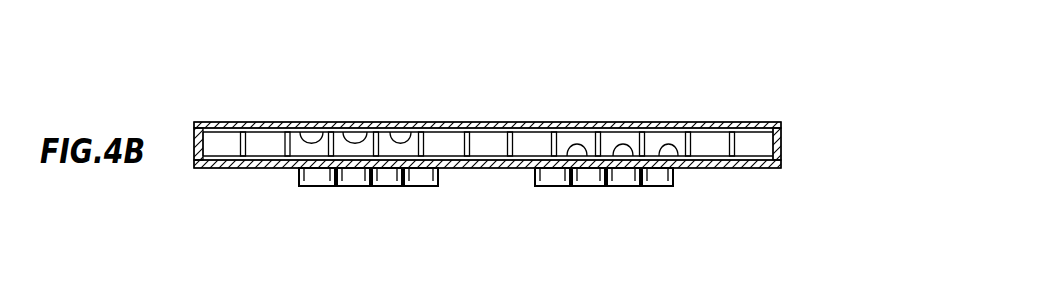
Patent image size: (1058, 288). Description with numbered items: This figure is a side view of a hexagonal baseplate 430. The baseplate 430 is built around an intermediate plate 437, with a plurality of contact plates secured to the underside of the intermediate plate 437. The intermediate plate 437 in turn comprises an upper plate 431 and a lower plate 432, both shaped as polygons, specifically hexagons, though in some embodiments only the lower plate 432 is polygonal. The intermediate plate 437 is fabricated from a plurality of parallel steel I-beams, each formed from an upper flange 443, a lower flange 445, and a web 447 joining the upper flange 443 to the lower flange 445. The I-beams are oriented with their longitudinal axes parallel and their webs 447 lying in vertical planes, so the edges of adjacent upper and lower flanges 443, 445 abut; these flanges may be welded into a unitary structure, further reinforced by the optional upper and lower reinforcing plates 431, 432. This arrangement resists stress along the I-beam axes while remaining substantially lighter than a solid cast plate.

The baseplate 430 is at (816, 86).
The upper plate 431 is at (683, 122).
The lower plate 432 is at (737, 169).
The intermediate plate 437 is at (792, 147).
The upper flange 443 is at (380, 122).
The lower flange 445 is at (658, 150).
The cavities 447 is at (500, 143).